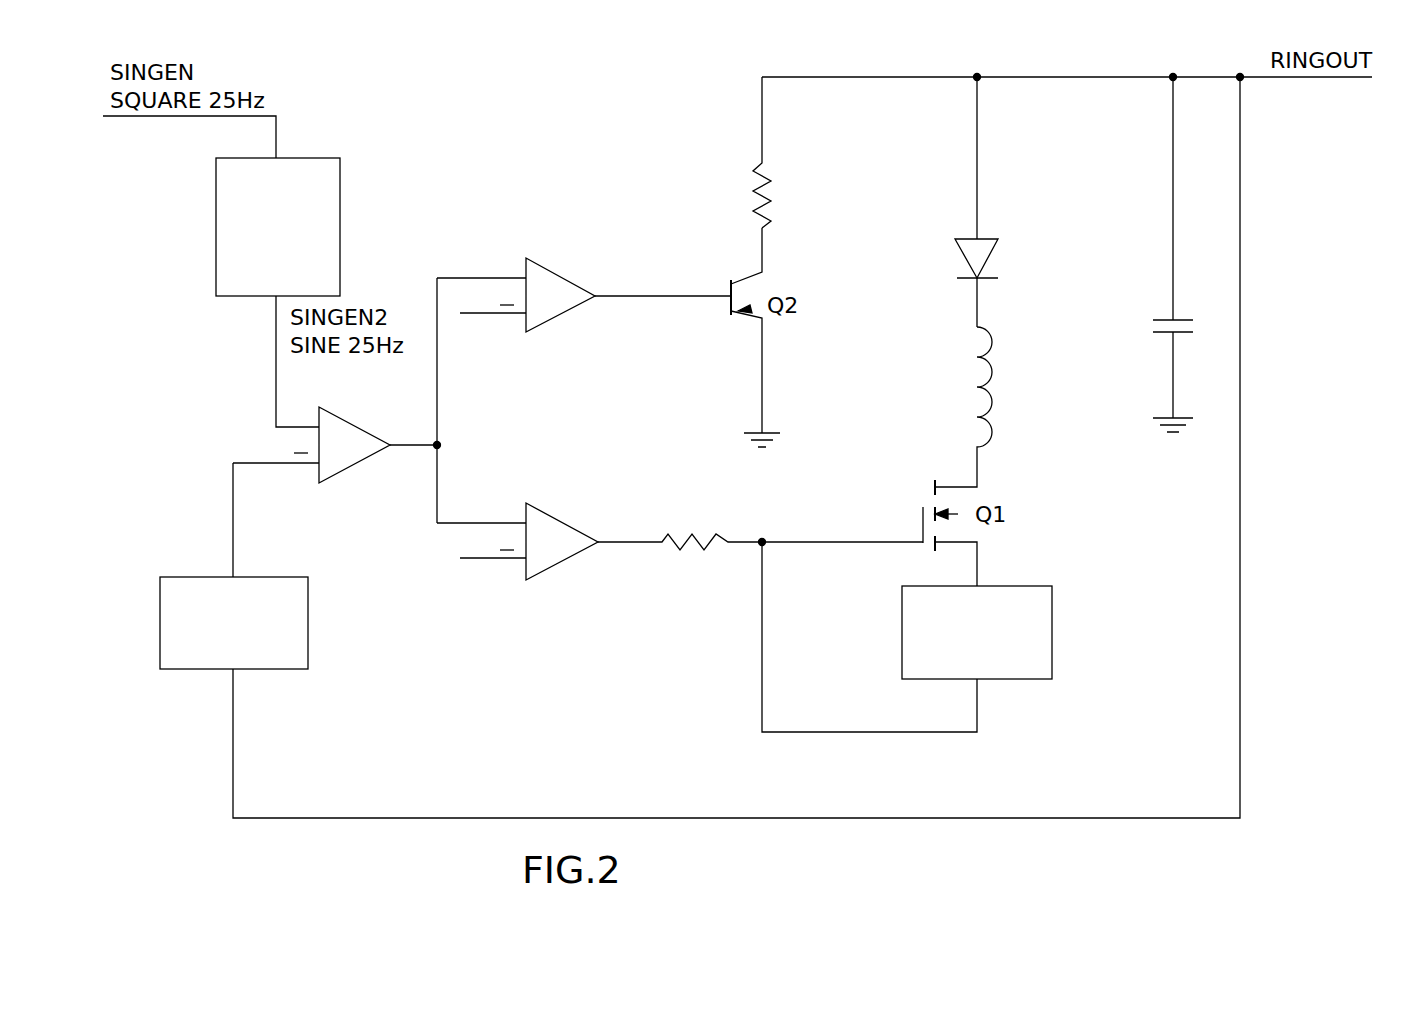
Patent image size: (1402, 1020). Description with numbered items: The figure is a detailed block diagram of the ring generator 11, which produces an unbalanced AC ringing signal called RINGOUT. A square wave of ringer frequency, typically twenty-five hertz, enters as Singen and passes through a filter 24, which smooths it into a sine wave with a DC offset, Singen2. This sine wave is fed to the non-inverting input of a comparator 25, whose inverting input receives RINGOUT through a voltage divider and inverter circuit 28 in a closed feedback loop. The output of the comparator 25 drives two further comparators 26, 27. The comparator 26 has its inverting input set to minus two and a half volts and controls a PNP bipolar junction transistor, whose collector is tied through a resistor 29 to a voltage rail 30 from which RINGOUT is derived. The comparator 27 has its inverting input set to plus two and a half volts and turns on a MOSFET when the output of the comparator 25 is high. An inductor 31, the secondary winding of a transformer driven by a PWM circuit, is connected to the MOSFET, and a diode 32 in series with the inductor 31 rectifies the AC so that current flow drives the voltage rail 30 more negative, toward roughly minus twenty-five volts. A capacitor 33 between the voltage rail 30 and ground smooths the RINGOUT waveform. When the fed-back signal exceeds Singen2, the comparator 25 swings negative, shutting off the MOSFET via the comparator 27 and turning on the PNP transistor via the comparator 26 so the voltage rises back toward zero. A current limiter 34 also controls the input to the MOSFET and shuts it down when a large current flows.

The ring generator 11 is at (1102, 156).
The filter 24 is at (308, 157).
The comparator 25 is at (340, 415).
The comparator 26 is at (562, 275).
The comparator 27 is at (563, 520).
The voltage divider and inverter circuit 28 is at (268, 577).
The resistor 29 is at (767, 167).
The voltage rail 30 is at (1080, 77).
The inductor 31 is at (992, 362).
The diode 32 is at (990, 240).
The capacitor 33 is at (1158, 318).
The current limiter 34 is at (1023, 586).